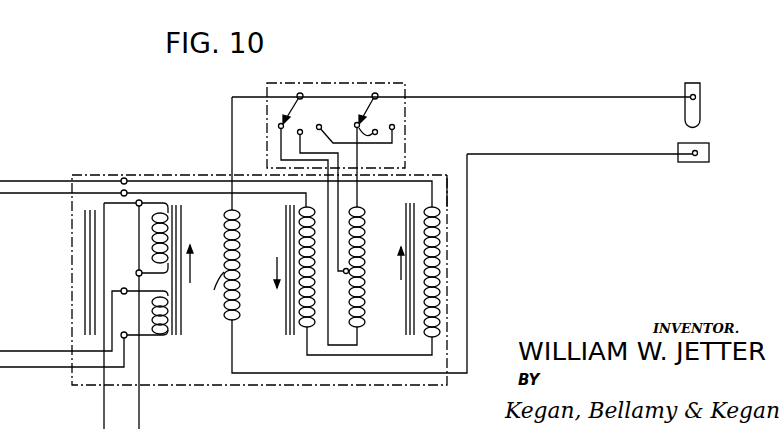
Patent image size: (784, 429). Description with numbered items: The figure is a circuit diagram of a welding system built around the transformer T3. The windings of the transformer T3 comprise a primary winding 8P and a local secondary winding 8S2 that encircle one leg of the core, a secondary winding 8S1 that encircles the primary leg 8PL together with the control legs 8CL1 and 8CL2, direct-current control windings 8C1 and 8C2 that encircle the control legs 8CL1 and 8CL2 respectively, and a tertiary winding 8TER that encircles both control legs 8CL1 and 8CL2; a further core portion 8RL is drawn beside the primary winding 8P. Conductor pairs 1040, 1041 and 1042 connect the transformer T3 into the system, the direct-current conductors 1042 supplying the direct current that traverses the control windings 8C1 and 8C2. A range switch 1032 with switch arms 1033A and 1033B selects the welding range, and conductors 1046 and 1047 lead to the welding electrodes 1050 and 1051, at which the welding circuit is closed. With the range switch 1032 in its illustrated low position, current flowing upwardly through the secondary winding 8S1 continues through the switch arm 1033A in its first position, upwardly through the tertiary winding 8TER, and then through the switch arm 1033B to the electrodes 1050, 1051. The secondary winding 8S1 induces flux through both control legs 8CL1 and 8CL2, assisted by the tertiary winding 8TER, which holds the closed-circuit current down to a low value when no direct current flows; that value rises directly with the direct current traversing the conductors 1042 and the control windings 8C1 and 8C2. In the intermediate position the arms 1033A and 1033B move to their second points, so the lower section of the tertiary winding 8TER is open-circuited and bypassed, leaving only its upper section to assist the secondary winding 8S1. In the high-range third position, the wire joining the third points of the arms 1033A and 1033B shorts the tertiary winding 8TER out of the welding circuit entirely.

The transformer T3 is at (452, 300).
The direct-current conductors 1042 is at (22, 193).
The conductor pair 1041 is at (37, 367).
The conductor pair 1040 is at (140, 396).
The reactor core 8RL is at (85, 234).
The primary winding 8P is at (153, 239).
The local secondary winding 8S2 is at (167, 330).
The primary leg 8PL is at (182, 230).
The secondary winding 8S1 is at (208, 288).
The direct-current control winding 8C1 is at (298, 212).
The control leg 8CL1 is at (286, 328).
The tertiary winding 8TER is at (349, 333).
The control leg 8CL2 is at (408, 320).
The direct-current control winding 8C2 is at (428, 208).
The range switch 1032 is at (407, 139).
The switch arm 1033A is at (296, 102).
The switch arm 1033B is at (372, 102).
The conductor 1046 is at (651, 96).
The conductor 1047 is at (650, 153).
The electrode 1050 is at (702, 115).
The electrode 1051 is at (709, 158).